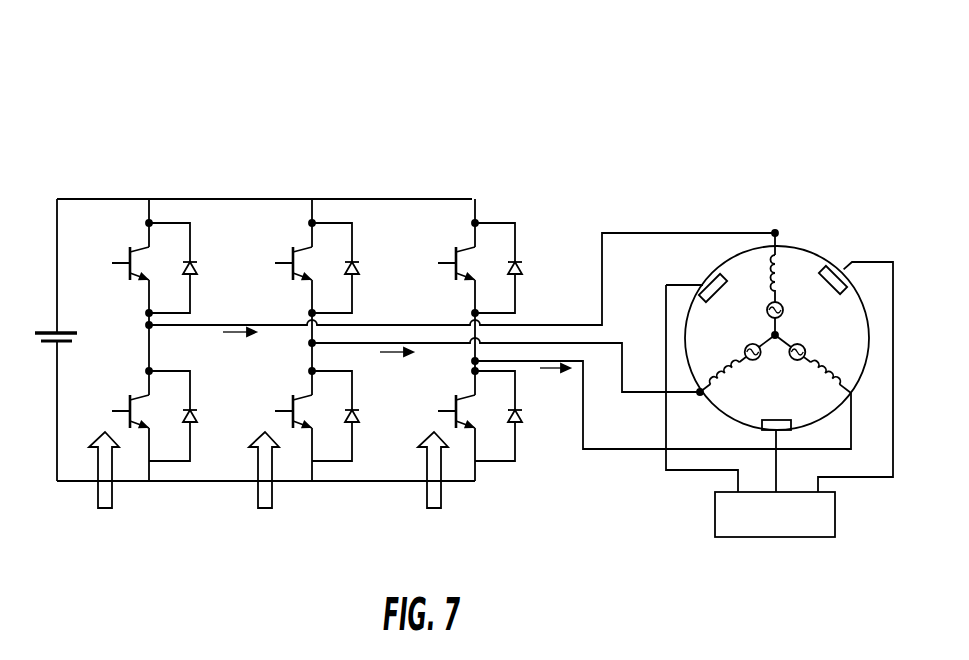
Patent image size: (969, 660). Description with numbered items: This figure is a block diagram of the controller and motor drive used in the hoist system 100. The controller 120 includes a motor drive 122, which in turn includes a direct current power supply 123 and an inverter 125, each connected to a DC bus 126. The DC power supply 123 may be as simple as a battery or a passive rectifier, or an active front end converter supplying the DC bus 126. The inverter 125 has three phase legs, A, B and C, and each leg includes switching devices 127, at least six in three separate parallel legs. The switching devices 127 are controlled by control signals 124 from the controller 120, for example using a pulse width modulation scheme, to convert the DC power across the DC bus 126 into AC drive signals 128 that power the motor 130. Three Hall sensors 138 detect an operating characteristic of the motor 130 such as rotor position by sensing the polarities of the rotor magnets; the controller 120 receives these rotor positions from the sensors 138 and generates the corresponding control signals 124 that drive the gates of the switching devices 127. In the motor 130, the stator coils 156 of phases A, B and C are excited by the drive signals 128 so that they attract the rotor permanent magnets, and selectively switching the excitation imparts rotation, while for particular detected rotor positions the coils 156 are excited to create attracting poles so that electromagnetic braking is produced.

The hoist system 100 is at (738, 60).
The controller 120 is at (414, 75).
The motor drive 122 is at (514, 102).
The DC power supply 123 is at (64, 152).
The control signals 124 is at (251, 475).
The inverter 125 is at (512, 172).
The DC bus 126 is at (463, 199).
The switching devices 127 is at (250, 340).
The drive signals 128 is at (568, 280).
The motor 130 is at (785, 202).
The Hall sensors 138 is at (715, 505).
The stator coils 156 is at (760, 307).